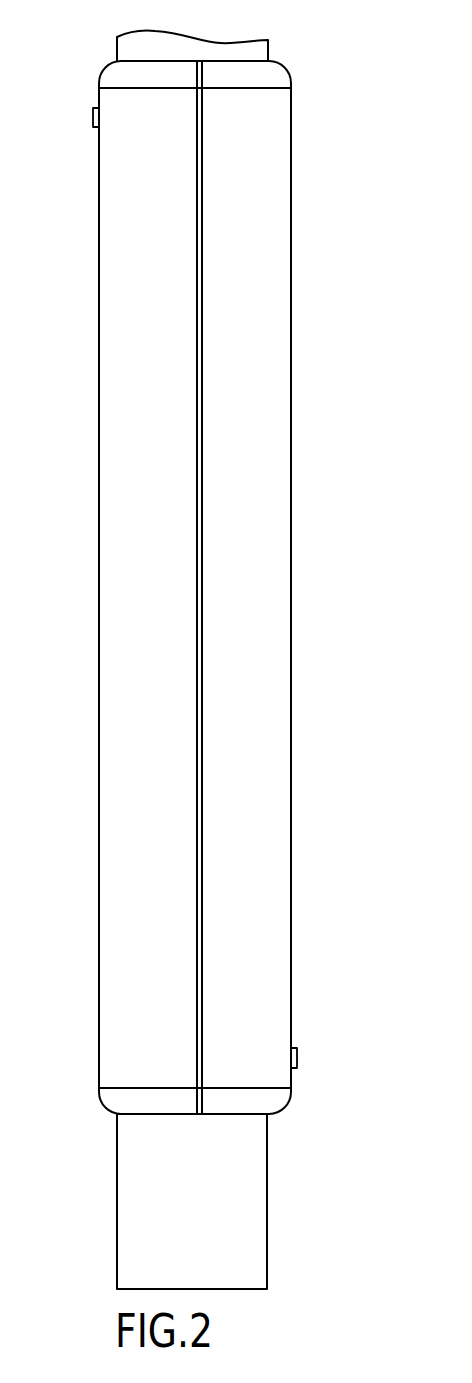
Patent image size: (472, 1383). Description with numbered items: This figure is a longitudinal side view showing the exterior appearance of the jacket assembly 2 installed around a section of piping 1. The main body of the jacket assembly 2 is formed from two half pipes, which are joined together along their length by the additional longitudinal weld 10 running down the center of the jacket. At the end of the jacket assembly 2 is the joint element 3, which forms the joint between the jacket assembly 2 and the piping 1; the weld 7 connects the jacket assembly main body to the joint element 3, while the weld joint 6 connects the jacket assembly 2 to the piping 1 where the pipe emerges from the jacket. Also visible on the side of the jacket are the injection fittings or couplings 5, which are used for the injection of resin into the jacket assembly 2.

The piping 1 is at (99, 1226).
The jacket assembly 2 is at (282, 348).
The joint element 3 is at (281, 73).
The injection fitting or coupling 5 is at (93, 112).
The weld joint 6 is at (246, 1115).
The weld 7 is at (275, 89).
The longitudinal weld 10 is at (203, 591).